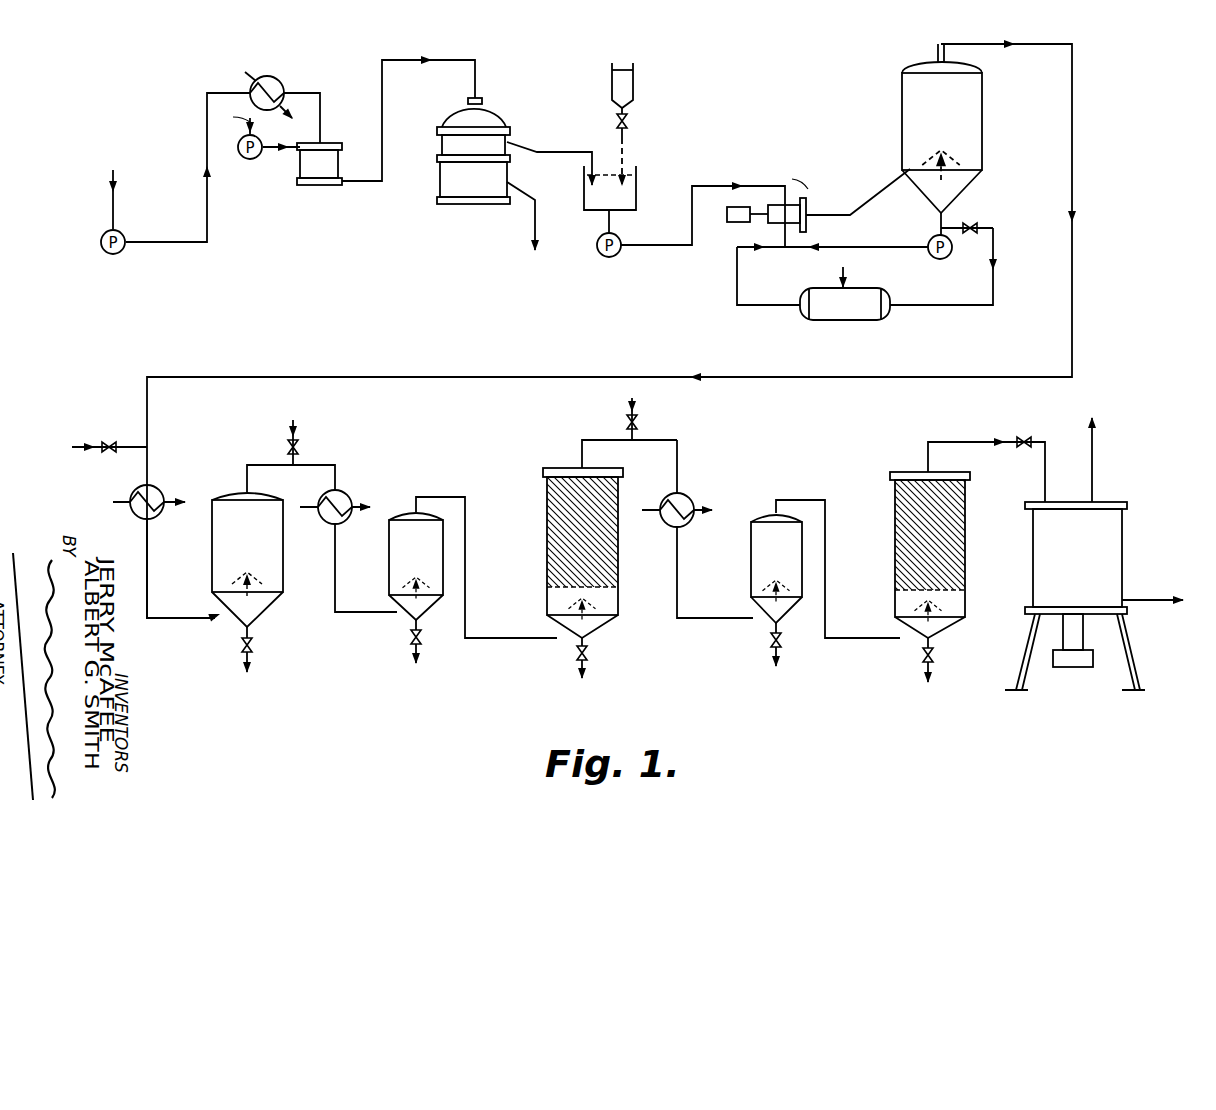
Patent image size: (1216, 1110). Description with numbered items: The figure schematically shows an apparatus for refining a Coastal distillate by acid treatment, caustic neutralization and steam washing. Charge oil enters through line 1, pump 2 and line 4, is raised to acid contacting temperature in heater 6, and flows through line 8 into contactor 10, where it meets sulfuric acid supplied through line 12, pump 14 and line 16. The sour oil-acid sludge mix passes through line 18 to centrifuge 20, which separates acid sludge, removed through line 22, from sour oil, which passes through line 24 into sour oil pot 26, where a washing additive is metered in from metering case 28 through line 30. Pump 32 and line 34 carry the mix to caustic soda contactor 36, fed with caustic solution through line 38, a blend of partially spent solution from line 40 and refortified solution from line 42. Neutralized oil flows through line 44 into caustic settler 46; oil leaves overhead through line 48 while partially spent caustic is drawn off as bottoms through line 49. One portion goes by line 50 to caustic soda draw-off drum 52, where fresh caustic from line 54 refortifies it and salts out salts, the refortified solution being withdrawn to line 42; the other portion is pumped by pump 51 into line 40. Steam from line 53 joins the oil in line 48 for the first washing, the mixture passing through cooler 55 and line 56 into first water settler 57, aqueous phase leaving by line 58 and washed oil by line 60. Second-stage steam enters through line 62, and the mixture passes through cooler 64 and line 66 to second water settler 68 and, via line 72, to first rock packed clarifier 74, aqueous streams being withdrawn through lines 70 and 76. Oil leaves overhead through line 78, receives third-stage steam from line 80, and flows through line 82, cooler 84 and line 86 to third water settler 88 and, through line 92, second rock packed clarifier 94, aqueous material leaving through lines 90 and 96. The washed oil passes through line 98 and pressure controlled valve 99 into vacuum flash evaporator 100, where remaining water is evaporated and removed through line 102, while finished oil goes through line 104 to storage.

The line 1 is at (118, 179).
The pump 2 is at (103, 234).
The line 4 is at (209, 219).
The heater 6 is at (284, 85).
The line 8 is at (320, 118).
The contactor 10 is at (311, 172).
The line 12 is at (254, 122).
The pump 14 is at (242, 156).
The line 16 is at (283, 155).
The line 18 is at (450, 53).
The centrifuge 20 is at (465, 187).
The line 22 is at (540, 207).
The line 24 is at (567, 145).
The sour oil pot 26 is at (637, 185).
The metering case 28 is at (636, 82).
The line 30 is at (628, 138).
The pump 32 is at (619, 237).
The line 34 is at (638, 247).
The caustic soda contactor 36 is at (791, 205).
The line 38 is at (785, 231).
The line 40 is at (881, 244).
The line 42 is at (737, 277).
The line 44 is at (877, 200).
The caustic settler 46 is at (930, 137).
The line 48 is at (1078, 197).
The line 49 is at (947, 216).
The line 50 is at (996, 247).
The pump 51 is at (952, 251).
The caustic soda draw-off drum 52 is at (834, 312).
The line 53 is at (80, 448).
The line 54 is at (850, 273).
The cooler 55 is at (157, 487).
The line 56 is at (153, 543).
The first water settler 57 is at (238, 554).
The line 58 is at (250, 653).
The line 60 is at (262, 467).
The line 62 is at (297, 424).
The cooler 64 is at (326, 494).
The line 66 is at (335, 540).
The second water settler 68 is at (407, 559).
The line 70 is at (417, 647).
The line 72 is at (465, 540).
The first rock packed clarifier 74 is at (573, 547).
The line 76 is at (582, 663).
The line 78 is at (607, 438).
The line 80 is at (640, 412).
The line 82 is at (680, 466).
The cooler 84 is at (683, 527).
The line 86 is at (680, 569).
The third water settler 88 is at (767, 566).
The line 90 is at (780, 650).
The line 92 is at (828, 530).
The second rock packed clarifier 94 is at (921, 542).
The line 96 is at (935, 663).
The line 98 is at (983, 442).
The pressure controlled valve 99 is at (1027, 436).
The vacuum flash evaporator 100 is at (1065, 556).
The line 102 is at (1098, 467).
The line 104 is at (1140, 607).